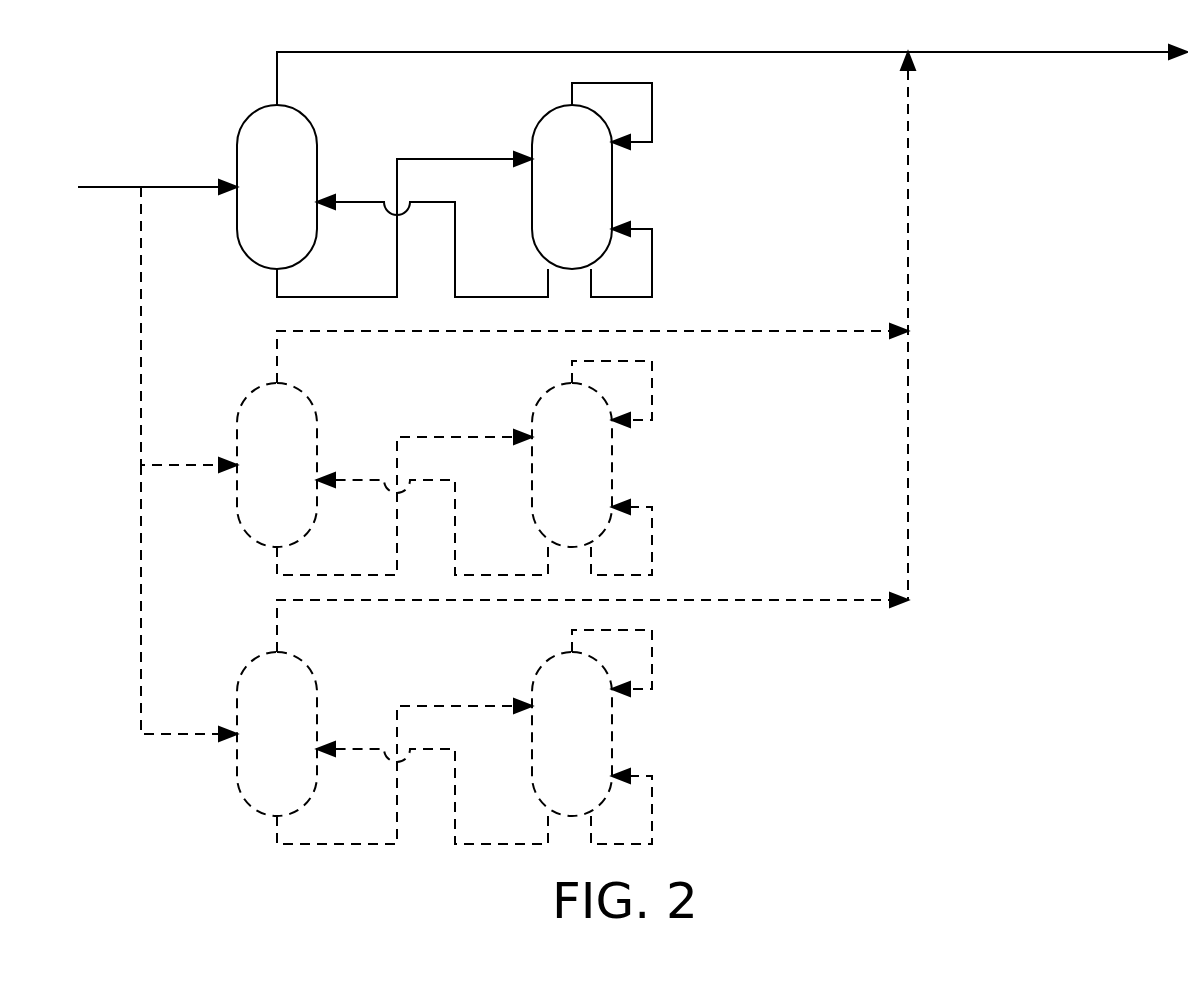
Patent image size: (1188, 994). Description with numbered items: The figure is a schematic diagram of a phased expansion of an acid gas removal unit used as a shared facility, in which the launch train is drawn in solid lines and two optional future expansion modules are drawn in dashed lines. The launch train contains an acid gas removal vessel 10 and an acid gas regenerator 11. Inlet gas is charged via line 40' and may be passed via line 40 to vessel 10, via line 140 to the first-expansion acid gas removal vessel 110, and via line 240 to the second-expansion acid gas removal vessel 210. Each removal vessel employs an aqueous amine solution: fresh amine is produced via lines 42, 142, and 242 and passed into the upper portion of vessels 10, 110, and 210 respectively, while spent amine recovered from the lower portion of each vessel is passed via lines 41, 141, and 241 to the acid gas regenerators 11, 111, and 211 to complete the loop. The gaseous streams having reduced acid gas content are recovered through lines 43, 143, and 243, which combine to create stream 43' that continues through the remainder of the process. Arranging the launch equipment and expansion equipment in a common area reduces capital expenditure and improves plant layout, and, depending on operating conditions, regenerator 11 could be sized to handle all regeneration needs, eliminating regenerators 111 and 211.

The acid gas removal vessel 10 is at (317, 153).
The acid gas regenerator 11 is at (612, 196).
The inlet gas line 40' is at (114, 156).
The inlet gas line to vessel 10 40 is at (189, 210).
The spent amine line 41 is at (325, 297).
The fresh amine line 42 is at (478, 297).
The treated gas line 43 is at (592, 79).
The combined treated gas stream 43' is at (1047, 78).
The acid gas removal vessel 110 is at (317, 431).
The acid gas regenerator 111 is at (612, 474).
The inlet gas line to vessel 110 140 is at (163, 465).
The spent amine line 141 is at (325, 575).
The fresh amine line 142 is at (478, 575).
The treated gas line 143 is at (787, 331).
The acid gas removal vessel 210 is at (317, 700).
The acid gas regenerator 211 is at (612, 744).
The inlet gas line to vessel 210 240 is at (163, 734).
The spent amine line 241 is at (325, 844).
The fresh amine line 242 is at (478, 844).
The treated gas line 243 is at (787, 600).